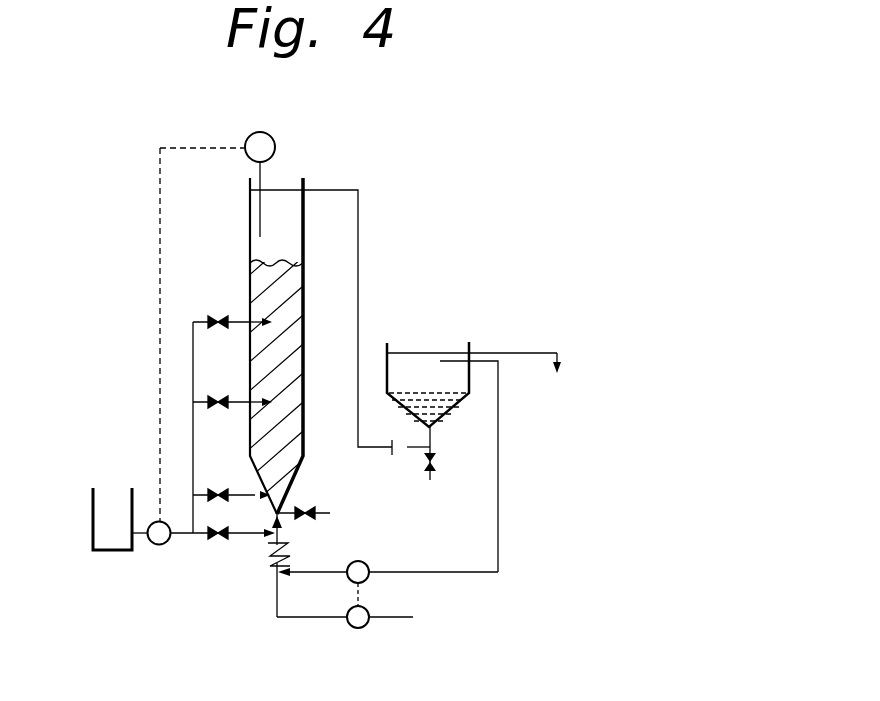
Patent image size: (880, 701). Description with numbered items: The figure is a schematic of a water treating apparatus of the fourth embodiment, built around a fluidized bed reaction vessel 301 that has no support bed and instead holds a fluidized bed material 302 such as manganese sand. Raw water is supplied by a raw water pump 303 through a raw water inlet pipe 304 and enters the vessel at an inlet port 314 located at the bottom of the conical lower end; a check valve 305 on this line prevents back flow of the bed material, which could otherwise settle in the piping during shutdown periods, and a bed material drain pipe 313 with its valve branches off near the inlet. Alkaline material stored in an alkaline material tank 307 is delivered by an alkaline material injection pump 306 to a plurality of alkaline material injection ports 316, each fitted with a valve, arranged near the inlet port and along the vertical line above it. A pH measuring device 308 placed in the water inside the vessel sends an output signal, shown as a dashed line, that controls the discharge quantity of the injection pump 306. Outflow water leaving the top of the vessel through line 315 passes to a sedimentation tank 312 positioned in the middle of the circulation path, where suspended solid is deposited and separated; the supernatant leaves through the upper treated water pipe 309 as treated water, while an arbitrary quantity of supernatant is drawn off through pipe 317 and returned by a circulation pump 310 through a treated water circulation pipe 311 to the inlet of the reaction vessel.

The fluidized bed reaction vessel 301 is at (308, 283).
The fluidized bed material 302 is at (292, 337).
The raw water pump 303 is at (366, 627).
The raw water inlet pipe 304 is at (413, 617).
The check valve 305 is at (292, 558).
The alkaline material injection pump 306 is at (160, 546).
The alkaline material tank 307 is at (108, 550).
The pH measuring device 308 is at (272, 137).
The treated water pipe 309 is at (548, 353).
The circulation pump 310 is at (368, 580).
The treated water circulation pipe 311 is at (440, 572).
The sedimentation tank 312 is at (390, 343).
The bed material drain pipe 313 is at (305, 508).
The inlet port 314 is at (290, 530).
The gas line 315 is at (320, 190).
The alkaline material injection ports 316 is at (253, 318).
The return pipe 317 is at (457, 358).